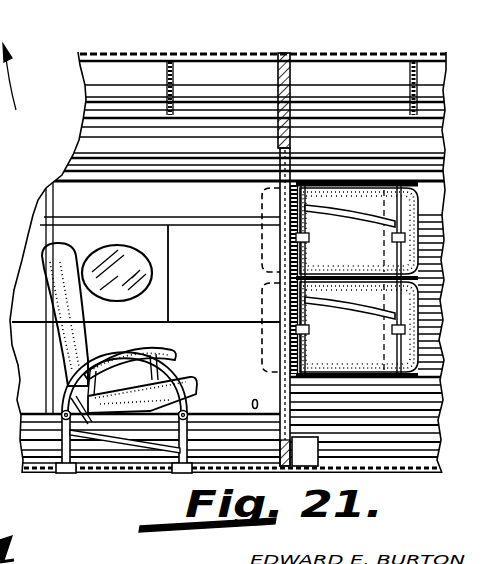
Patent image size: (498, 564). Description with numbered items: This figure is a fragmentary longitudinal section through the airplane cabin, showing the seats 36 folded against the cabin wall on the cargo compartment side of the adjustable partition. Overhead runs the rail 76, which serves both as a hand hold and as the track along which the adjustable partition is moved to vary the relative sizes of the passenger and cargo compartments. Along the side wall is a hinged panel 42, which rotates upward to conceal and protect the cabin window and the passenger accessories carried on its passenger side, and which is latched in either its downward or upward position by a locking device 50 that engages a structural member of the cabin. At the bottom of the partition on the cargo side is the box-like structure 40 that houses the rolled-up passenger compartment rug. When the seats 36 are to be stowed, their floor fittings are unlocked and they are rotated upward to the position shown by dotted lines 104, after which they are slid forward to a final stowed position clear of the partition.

The rail 76 is at (229, 155).
The dotted lines 104 is at (252, 252).
The seats 36 is at (86, 340).
The hinged panels 42 is at (146, 291).
The locking device 50 is at (252, 404).
The box-like structure 40 is at (320, 455).